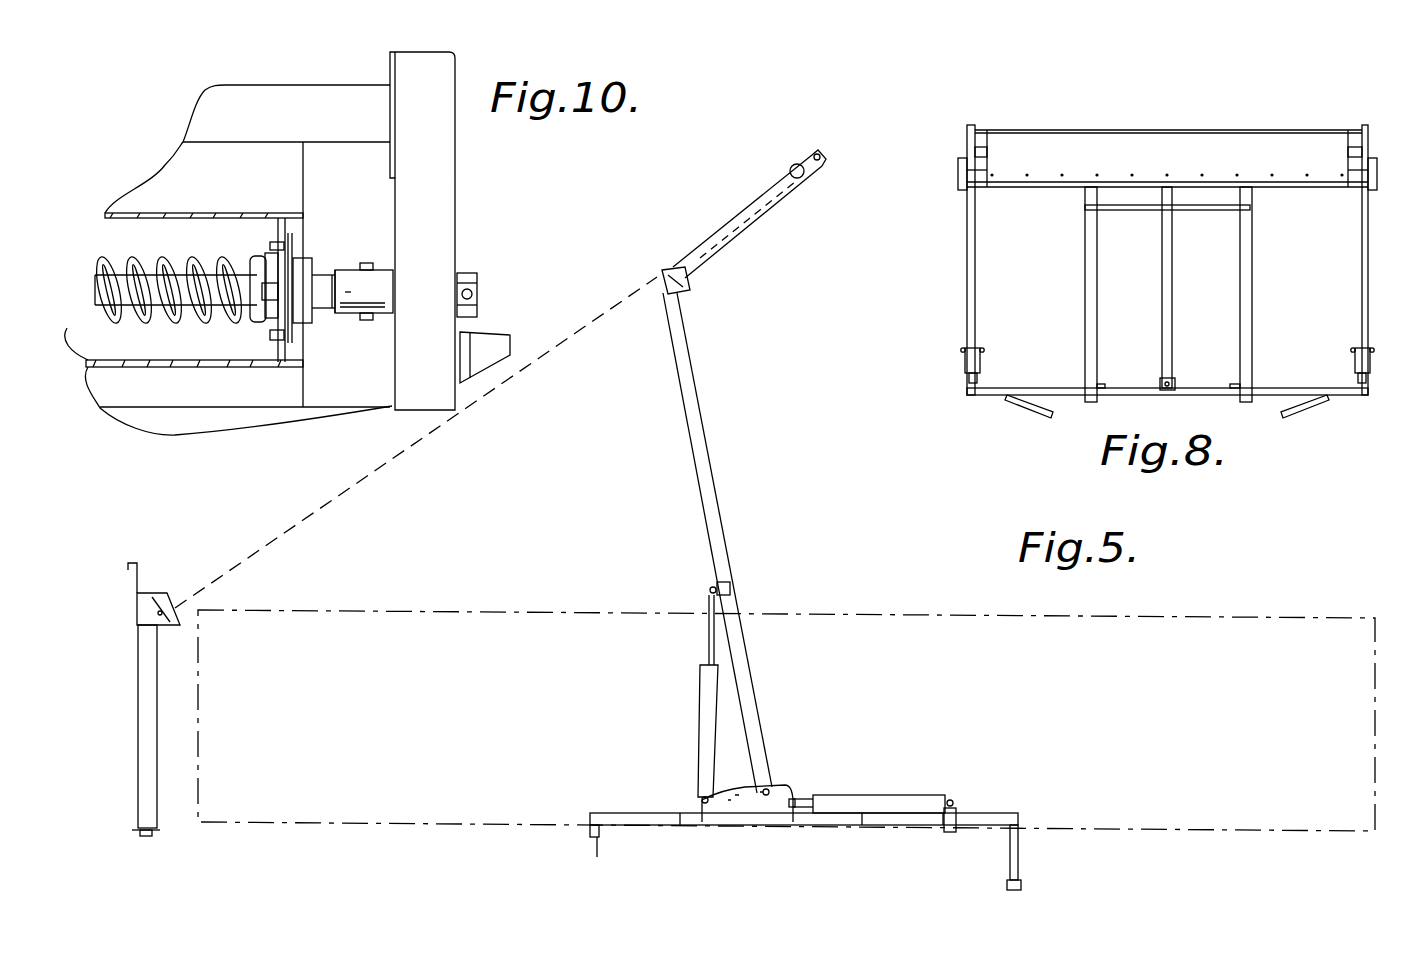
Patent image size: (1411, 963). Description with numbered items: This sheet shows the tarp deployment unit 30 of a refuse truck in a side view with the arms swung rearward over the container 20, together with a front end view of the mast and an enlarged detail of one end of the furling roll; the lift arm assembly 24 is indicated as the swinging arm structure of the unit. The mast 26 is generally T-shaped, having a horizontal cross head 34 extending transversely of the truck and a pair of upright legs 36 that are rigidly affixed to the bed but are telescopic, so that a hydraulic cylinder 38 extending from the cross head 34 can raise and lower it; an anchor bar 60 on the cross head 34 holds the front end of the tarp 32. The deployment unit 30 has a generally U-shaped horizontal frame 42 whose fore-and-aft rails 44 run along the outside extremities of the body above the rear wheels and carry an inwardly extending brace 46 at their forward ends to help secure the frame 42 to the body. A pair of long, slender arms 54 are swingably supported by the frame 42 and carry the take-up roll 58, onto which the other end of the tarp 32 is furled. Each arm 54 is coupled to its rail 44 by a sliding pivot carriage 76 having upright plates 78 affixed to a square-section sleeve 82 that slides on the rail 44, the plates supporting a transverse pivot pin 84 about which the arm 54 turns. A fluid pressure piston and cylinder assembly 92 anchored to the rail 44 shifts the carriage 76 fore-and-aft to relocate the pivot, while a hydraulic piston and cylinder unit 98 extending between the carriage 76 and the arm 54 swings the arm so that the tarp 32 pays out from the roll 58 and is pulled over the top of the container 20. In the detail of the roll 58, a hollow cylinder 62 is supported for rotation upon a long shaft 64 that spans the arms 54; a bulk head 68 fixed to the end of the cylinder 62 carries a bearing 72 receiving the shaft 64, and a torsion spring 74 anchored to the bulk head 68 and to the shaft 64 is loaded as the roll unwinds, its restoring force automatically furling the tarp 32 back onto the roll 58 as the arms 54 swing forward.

In FIG. 5, the container 20 is at (1108, 640).
In FIG. 5, the lift arm assembly 24 is at (752, 548).
In FIG. 8, the mast 26 is at (1270, 236).
In FIG. 5, the mast 26 is at (122, 614).
In FIG. 8, the tarp deployment unit 30 is at (1347, 224).
In FIG. 5, the tarp deployment unit 30 is at (780, 719).
In FIG. 5, the tarp 32 is at (370, 472).
In FIG. 8, the cross head 34 is at (978, 177).
In FIG. 5, the cross head 34 is at (145, 627).
In FIG. 8, the upright legs 36 is at (1247, 290).
In FIG. 8, the hydraulic cylinder 38 is at (1165, 250).
In FIG. 8, the frame 42 is at (1330, 405).
In FIG. 8, the fore-and-aft rails 44 is at (963, 380).
In FIG. 5, the fore-and-aft rails 44 is at (913, 823).
In FIG. 8, the brace 46 is at (1067, 388).
In FIG. 10, the arms 54 is at (430, 183).
In FIG. 8, the arms 54 is at (966, 225).
In FIG. 5, the arms 54 is at (698, 431).
In FIG. 10, the take-up roll 58 is at (220, 205).
In FIG. 5, the take-up roll 58 is at (802, 175).
In FIG. 5, the anchor bar 60 is at (148, 603).
In FIG. 10, the hollow cylinder 62 is at (155, 212).
In FIG. 10, the shaft 64 is at (475, 284).
In FIG. 10, the bulk head 68 is at (272, 220).
In FIG. 10, the bearing 72 is at (301, 325).
In FIG. 10, the torsion spring 74 is at (177, 318).
In FIG. 8, the sliding pivot carriage 76 is at (950, 362).
In FIG. 5, the sliding pivot carriage 76 is at (804, 774).
In FIG. 5, the plate 78 is at (746, 812).
In FIG. 5, the sleeve 82 is at (810, 817).
In FIG. 8, the pivot pin 84 is at (980, 347).
In FIG. 5, the fluid pressure piston and cylinder assembly 92 is at (887, 803).
In FIG. 5, the hydraulic piston and cylinder unit 98 is at (707, 748).